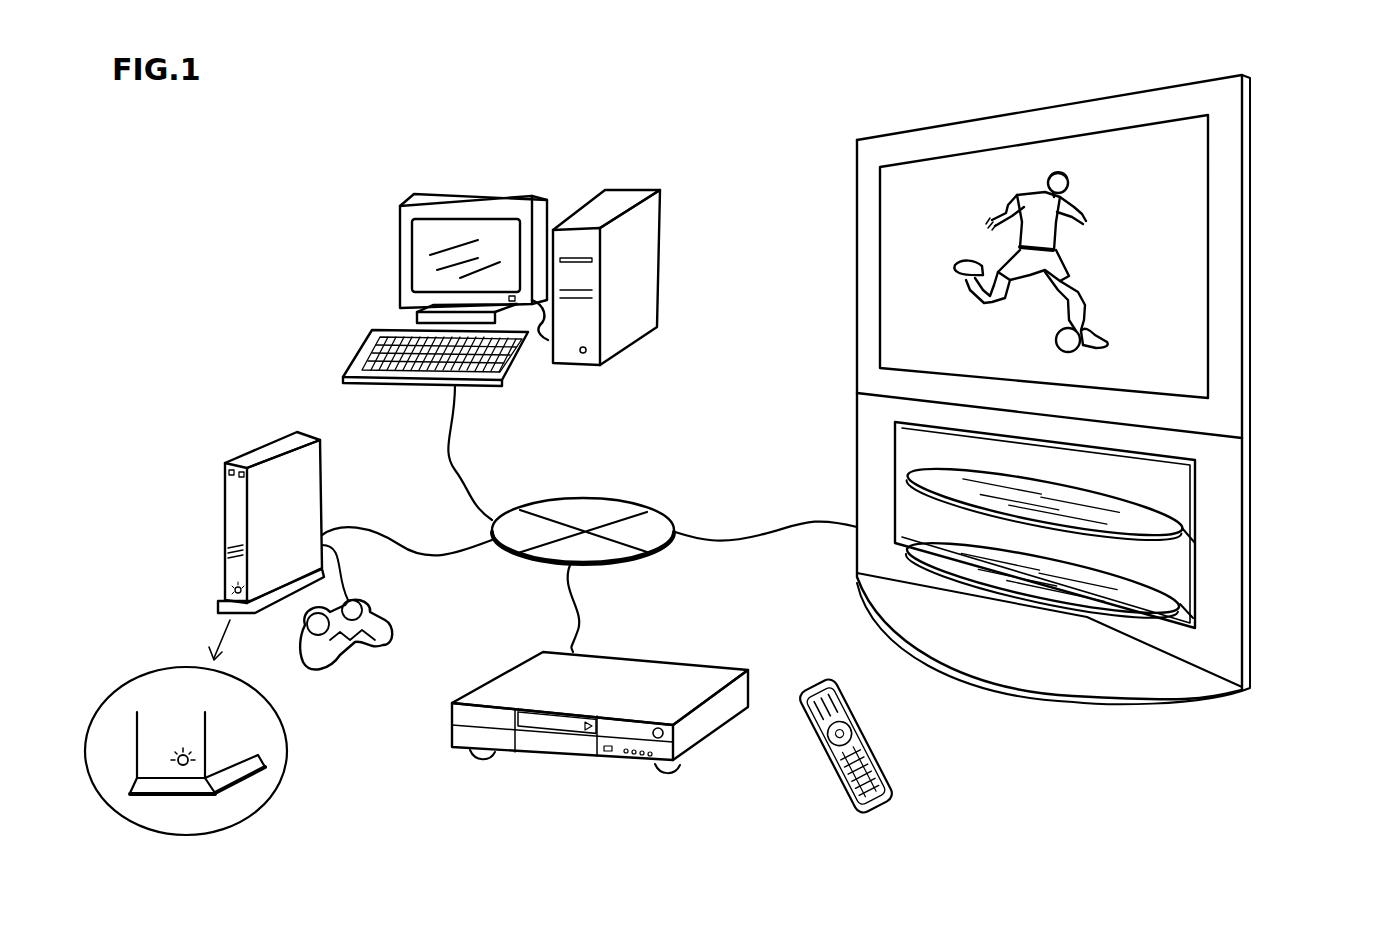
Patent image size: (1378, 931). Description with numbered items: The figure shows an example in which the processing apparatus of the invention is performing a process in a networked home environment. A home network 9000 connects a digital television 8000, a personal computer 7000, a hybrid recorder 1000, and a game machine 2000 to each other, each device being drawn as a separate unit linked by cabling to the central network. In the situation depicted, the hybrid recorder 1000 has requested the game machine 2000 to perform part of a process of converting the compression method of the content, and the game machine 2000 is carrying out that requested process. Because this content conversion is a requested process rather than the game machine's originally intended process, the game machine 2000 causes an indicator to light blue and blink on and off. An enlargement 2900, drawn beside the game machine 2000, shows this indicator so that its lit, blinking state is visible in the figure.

The personal computer 7000 is at (398, 250).
The game machine 2000 is at (224, 503).
The enlargement 2900 is at (283, 785).
The home network 9000 is at (667, 514).
The hybrid recorder 1000 is at (450, 707).
The digital television 8000 is at (1251, 292).